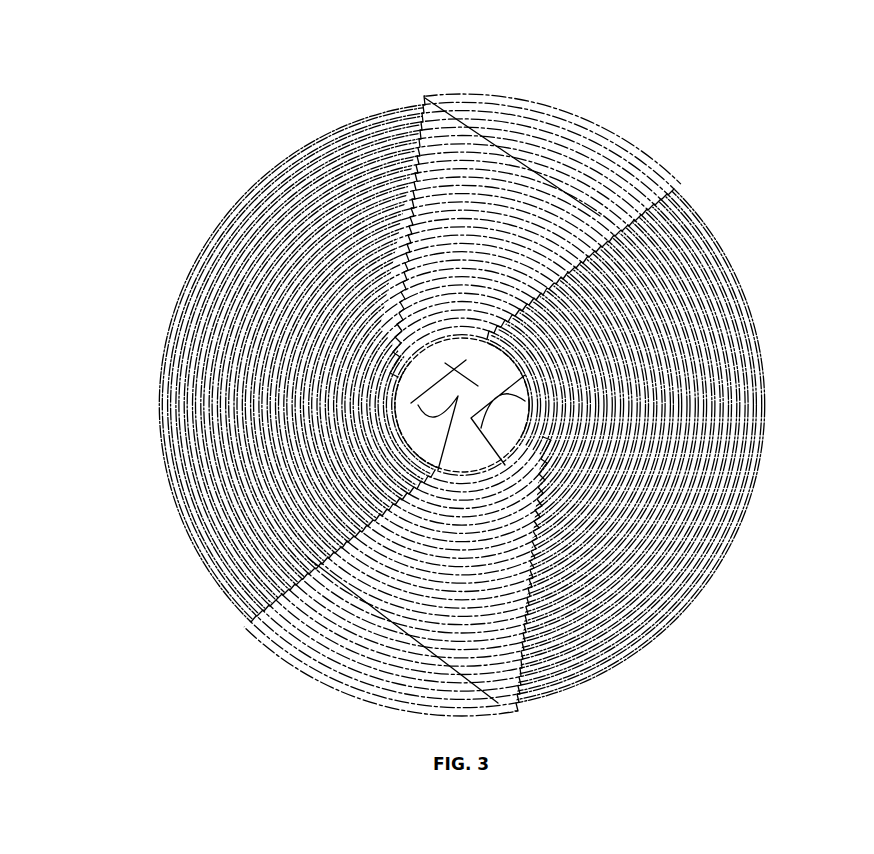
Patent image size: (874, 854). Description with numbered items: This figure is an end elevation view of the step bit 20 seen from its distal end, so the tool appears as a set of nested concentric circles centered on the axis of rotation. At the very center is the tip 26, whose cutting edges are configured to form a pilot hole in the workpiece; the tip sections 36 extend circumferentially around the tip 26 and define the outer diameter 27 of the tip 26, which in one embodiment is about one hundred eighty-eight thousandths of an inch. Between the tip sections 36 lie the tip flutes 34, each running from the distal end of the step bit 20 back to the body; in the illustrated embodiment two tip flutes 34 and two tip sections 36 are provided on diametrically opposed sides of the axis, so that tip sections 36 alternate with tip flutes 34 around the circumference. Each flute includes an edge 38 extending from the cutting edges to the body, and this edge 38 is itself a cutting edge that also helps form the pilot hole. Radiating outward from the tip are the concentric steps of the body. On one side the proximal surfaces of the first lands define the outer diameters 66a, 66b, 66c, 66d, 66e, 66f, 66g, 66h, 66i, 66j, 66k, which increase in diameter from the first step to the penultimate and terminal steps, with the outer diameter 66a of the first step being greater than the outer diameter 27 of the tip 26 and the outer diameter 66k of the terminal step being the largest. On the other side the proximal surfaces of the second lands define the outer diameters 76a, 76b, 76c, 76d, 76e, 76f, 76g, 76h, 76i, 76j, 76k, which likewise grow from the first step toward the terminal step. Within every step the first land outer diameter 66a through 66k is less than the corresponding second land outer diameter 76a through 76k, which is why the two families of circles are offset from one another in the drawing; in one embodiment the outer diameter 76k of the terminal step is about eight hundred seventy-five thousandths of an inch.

The step bit 20 is at (570, 90).
The tip 26 is at (455, 345).
The outer diameter of the tip 27 is at (522, 427).
The tip flute 34 is at (422, 393).
The tip section 36 is at (478, 345).
The edge 38 is at (468, 355).
The outer diameter of the first land 66a is at (400, 445).
The outer diameter of the first land 66b is at (363, 442).
The outer diameter of the first land 66c is at (337, 427).
The outer diameter of the first land 66d is at (313, 413).
The outer diameter of the first land 66e is at (292, 382).
The outer diameter of the first land 66f is at (268, 362).
The outer diameter of the first land 66g is at (257, 335).
The outer diameter of the first land 66h is at (248, 300).
The outer diameter of the first land 66i is at (242, 260).
The outer diameter of the first land 66j is at (242, 222).
The outer diameter of the first land 66k is at (233, 193).
The outer diameter of the second land 76a is at (553, 420).
The outer diameter of the second land 76b is at (567, 413).
The outer diameter of the second land 76c is at (590, 405).
The outer diameter of the second land 76d is at (610, 387).
The outer diameter of the second land 76e is at (630, 370).
The outer diameter of the second land 76f is at (652, 353).
The outer diameter of the second land 76g is at (667, 335).
The outer diameter of the second land 76h is at (683, 313).
The outer diameter of the second land 76i is at (695, 287).
The outer diameter of the second land 76j is at (707, 260).
The outer diameter of the second land 76k is at (720, 230).